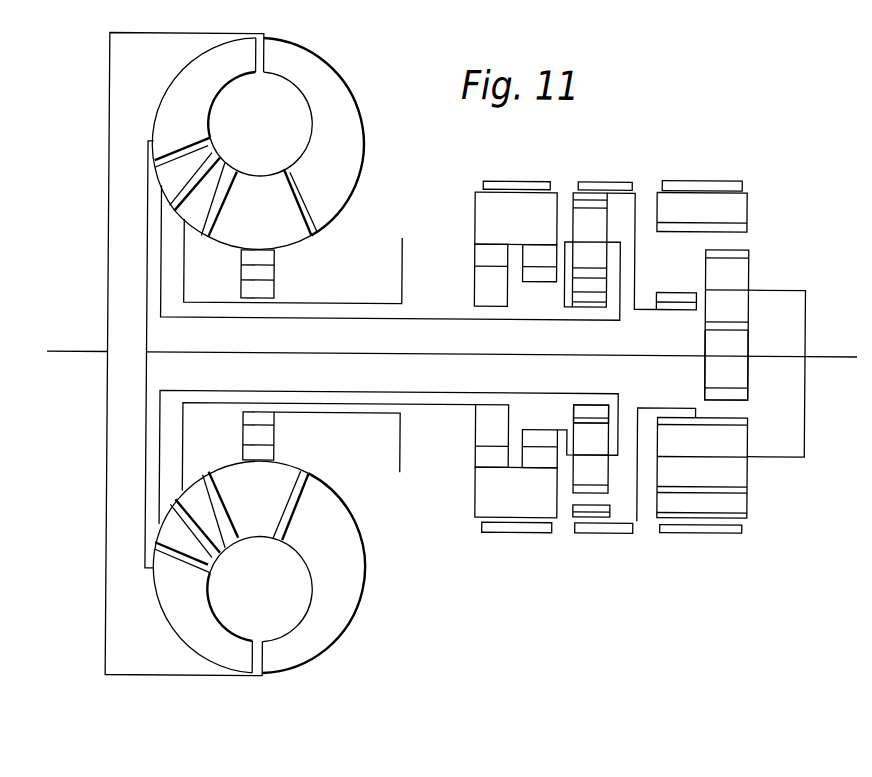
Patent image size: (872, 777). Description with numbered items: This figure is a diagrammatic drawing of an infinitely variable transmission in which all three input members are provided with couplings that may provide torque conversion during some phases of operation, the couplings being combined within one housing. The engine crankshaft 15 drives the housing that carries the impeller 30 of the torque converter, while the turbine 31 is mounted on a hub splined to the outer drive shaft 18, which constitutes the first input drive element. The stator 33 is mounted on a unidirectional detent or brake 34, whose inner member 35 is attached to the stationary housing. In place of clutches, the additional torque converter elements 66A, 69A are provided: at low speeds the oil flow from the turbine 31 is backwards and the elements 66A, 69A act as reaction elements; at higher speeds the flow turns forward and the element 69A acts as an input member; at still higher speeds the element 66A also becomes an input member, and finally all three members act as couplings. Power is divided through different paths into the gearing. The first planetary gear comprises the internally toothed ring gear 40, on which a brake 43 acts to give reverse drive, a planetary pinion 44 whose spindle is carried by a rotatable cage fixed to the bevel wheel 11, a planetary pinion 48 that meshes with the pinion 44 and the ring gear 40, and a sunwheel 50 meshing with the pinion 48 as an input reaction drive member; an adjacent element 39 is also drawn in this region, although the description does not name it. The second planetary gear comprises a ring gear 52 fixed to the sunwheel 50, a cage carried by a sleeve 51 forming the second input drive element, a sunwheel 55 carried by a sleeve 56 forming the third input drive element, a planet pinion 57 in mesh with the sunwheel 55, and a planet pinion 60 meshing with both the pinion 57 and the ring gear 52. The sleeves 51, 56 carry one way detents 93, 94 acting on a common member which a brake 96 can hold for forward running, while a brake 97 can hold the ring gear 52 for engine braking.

The bevel wheel 11 is at (847, 349).
The engine crankshaft 15 is at (89, 347).
The outer drive shaft 18 is at (360, 354).
The impeller 30 is at (312, 137).
The turbine 31 is at (194, 102).
The stator 33 is at (263, 211).
The unidirectional detent or brake 34 is at (284, 274).
The inner member 35 is at (377, 297).
The gear 39 is at (720, 368).
The ring gear 40 is at (732, 208).
The brake 43 is at (717, 176).
The planetary pinion 44 is at (732, 270).
The planetary pinion 48 is at (739, 471).
The sunwheel 50 is at (667, 406).
The sleeve 51 is at (402, 392).
The ring gear 52 is at (591, 514).
The sunwheel 55 is at (592, 411).
The sleeve 56 is at (448, 404).
The planet pinion 57 is at (601, 482).
The planet pinion 60 is at (582, 217).
The torque converter element 66A is at (200, 221).
The torque converter element 69A is at (140, 178).
The one way detent 93 is at (486, 459).
The one way detent 94 is at (536, 450).
The brake 96 is at (530, 177).
The brake 97 is at (602, 179).